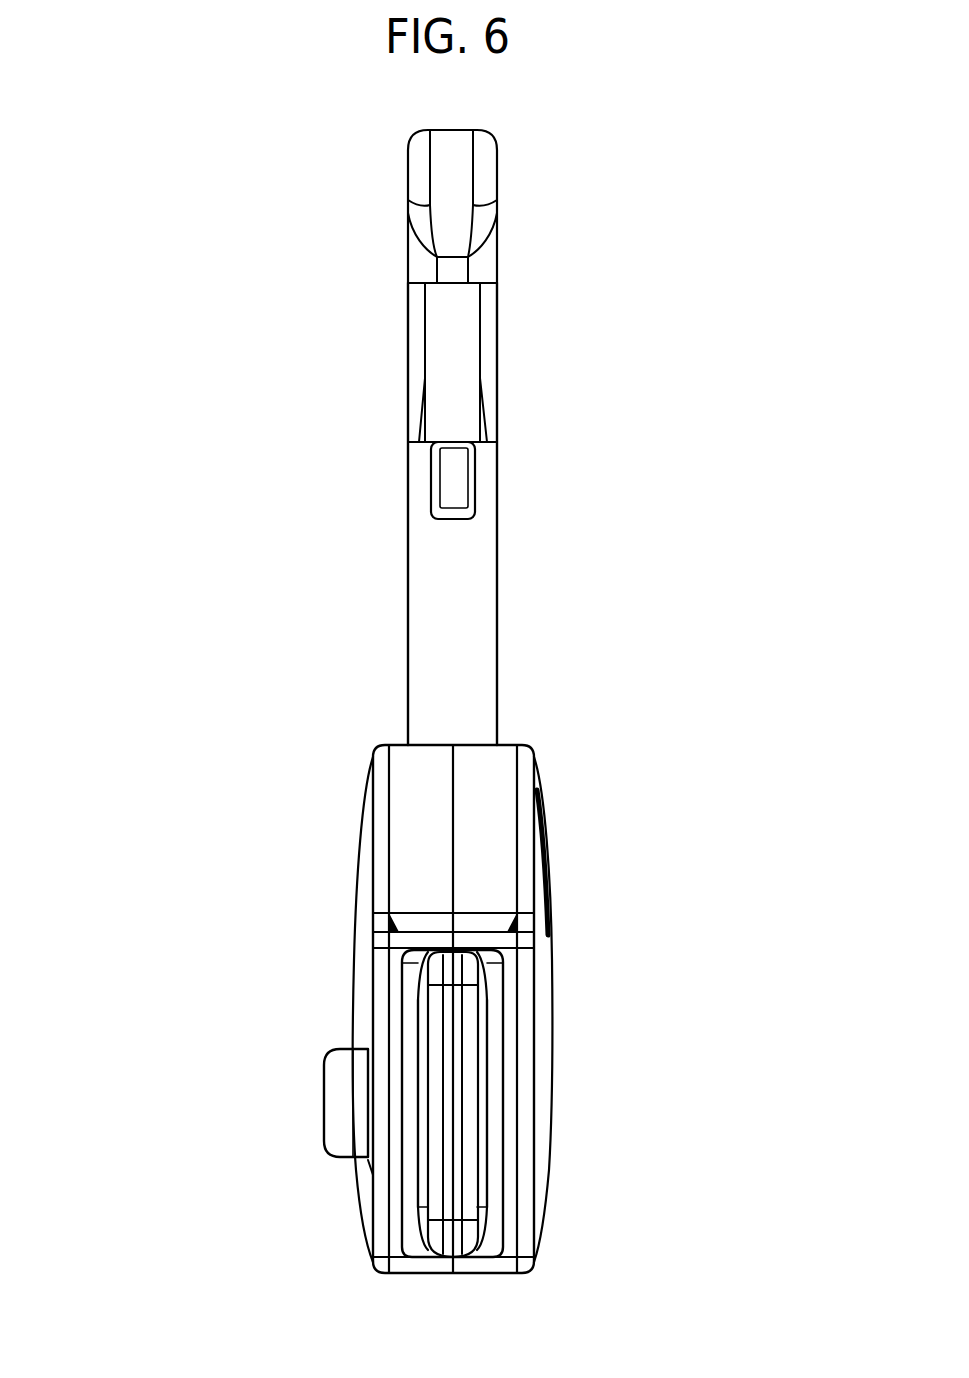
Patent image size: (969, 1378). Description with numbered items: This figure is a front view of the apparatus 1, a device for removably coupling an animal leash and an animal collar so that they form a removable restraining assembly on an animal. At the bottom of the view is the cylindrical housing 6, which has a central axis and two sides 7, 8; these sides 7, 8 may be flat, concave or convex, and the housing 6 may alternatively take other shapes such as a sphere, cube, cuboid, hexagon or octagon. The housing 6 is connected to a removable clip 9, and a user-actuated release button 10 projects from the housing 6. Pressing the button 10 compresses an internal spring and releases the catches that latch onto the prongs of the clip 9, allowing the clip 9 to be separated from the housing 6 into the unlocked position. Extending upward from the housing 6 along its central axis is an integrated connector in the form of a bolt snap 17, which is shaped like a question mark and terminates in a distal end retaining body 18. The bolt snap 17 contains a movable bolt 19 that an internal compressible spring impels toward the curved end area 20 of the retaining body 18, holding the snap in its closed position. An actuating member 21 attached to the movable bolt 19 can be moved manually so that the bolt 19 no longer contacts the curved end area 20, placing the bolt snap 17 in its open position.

The apparatus 1 is at (168, 578).
The housing 6 is at (402, 800).
The side 7 is at (356, 886).
The side 8 is at (545, 937).
The clip 9 is at (482, 1127).
The release button 10 is at (342, 1109).
The bolt snap 17 is at (430, 594).
The retaining body 18 is at (460, 162).
The movable bolt 19 is at (460, 389).
The curved end area 20 is at (443, 242).
The actuating member 21 is at (450, 485).